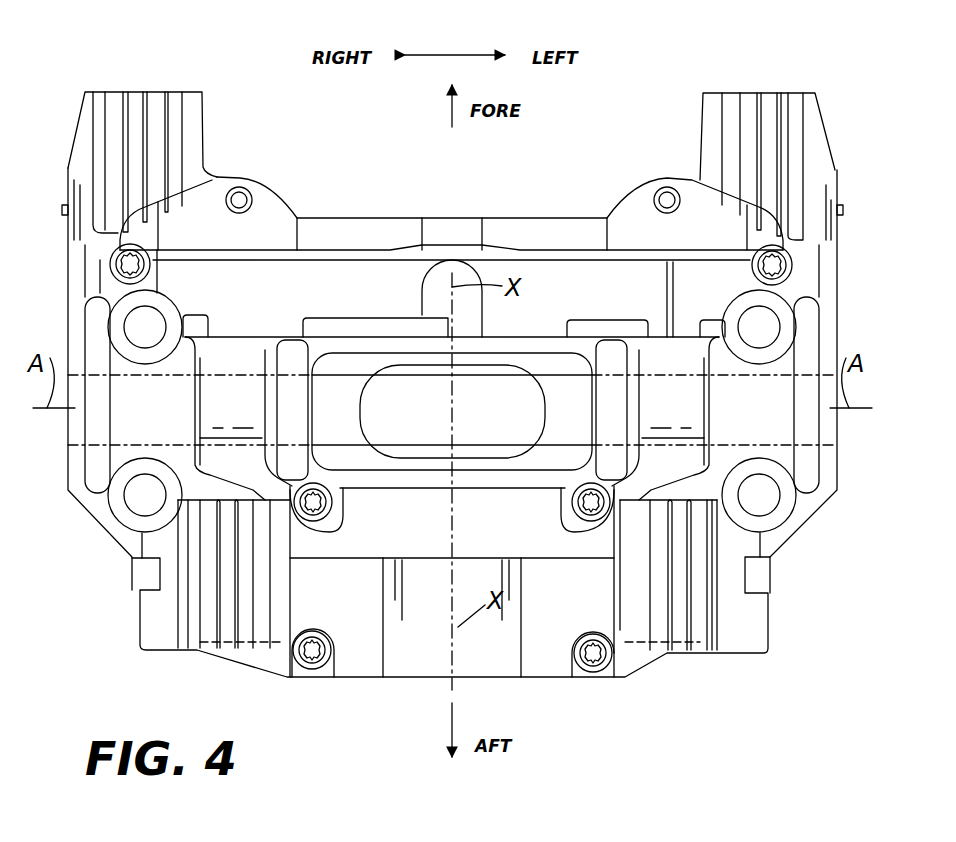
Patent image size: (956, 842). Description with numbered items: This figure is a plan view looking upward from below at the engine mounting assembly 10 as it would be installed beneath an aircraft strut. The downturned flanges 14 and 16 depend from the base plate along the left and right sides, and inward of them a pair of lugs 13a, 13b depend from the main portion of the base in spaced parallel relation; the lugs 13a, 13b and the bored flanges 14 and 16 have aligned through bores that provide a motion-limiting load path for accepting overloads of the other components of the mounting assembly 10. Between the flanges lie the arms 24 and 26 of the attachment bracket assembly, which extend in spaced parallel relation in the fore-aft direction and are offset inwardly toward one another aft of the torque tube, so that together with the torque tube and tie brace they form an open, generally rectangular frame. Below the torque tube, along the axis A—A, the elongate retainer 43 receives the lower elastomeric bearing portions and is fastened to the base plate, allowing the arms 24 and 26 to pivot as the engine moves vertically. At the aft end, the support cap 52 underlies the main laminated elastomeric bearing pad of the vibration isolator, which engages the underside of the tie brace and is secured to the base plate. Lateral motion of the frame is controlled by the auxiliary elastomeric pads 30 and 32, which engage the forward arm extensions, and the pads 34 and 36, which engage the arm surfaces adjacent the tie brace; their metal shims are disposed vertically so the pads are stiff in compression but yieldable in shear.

The engine mounting assembly 10 is at (424, 691).
The lug 13a is at (612, 355).
The lug 13b is at (293, 347).
The left flange 14 is at (830, 477).
The right flange 16 is at (72, 462).
The arm 24 is at (692, 405).
The arm 26 is at (202, 395).
The pad 30 is at (768, 97).
The pad 32 is at (153, 97).
The pad 34 is at (700, 637).
The pad 36 is at (227, 632).
The retainer 43 is at (385, 222).
The support cap 52 is at (352, 652).